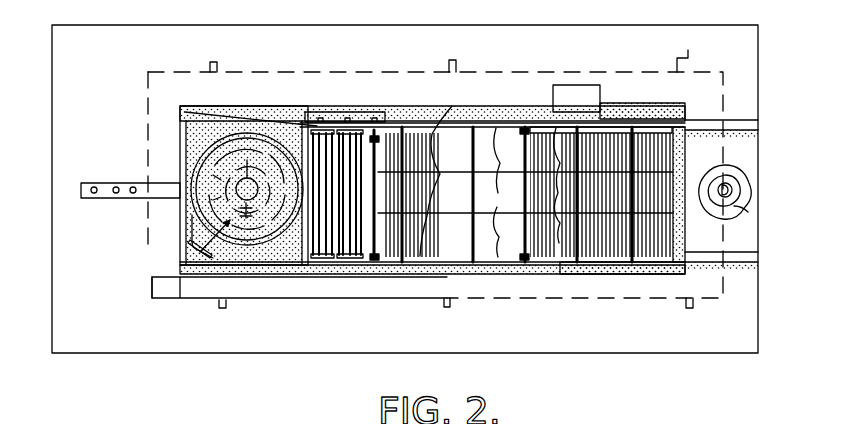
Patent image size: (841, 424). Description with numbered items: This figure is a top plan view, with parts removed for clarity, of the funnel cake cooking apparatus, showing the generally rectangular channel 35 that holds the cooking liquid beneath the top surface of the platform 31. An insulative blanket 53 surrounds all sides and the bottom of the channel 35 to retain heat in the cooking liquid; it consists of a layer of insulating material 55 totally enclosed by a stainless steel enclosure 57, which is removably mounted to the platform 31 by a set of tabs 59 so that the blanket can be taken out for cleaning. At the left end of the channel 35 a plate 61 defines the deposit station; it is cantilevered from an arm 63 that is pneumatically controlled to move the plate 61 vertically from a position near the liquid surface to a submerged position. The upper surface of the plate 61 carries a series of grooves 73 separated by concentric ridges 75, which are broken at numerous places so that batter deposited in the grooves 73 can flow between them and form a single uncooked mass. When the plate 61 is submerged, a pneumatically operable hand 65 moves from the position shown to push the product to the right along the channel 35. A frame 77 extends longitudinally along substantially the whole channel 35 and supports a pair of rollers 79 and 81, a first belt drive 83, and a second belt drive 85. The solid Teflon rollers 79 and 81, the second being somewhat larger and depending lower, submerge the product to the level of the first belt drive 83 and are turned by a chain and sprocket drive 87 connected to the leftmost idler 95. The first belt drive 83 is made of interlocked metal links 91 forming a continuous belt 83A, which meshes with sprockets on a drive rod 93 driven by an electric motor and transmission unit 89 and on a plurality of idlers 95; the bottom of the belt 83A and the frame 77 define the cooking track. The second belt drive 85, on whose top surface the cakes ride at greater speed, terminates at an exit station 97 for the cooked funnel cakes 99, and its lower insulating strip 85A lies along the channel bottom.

The platform 31 is at (84, 342).
The channel 35 is at (176, 156).
The insulative blanket 53 is at (183, 236).
The insulating material 55 is at (266, 288).
The stainless steel enclosure 57 is at (186, 302).
The tabs 59 is at (213, 62).
The plate 61 is at (432, 282).
The arm 63 is at (135, 179).
The hand 65 is at (178, 122).
The grooves 73 is at (220, 238).
The concentric ridges 75 is at (247, 182).
The frame 77 is at (521, 192).
The roller 79 is at (318, 265).
The roller 81 is at (363, 260).
The first belt drive 83 is at (514, 100).
The continuous belt 83A is at (439, 168).
The second belt drive 85 is at (674, 274).
The bottom insulation strip 85A is at (636, 270).
The chain and sprocket drive 87 is at (348, 114).
The electric motor and transmission unit 89 is at (601, 88).
The metal links 91 is at (429, 194).
The drive rod 93 is at (580, 263).
The idlers 95 is at (380, 138).
The exit station 97 is at (738, 152).
The cooked funnel cakes 99 is at (748, 212).